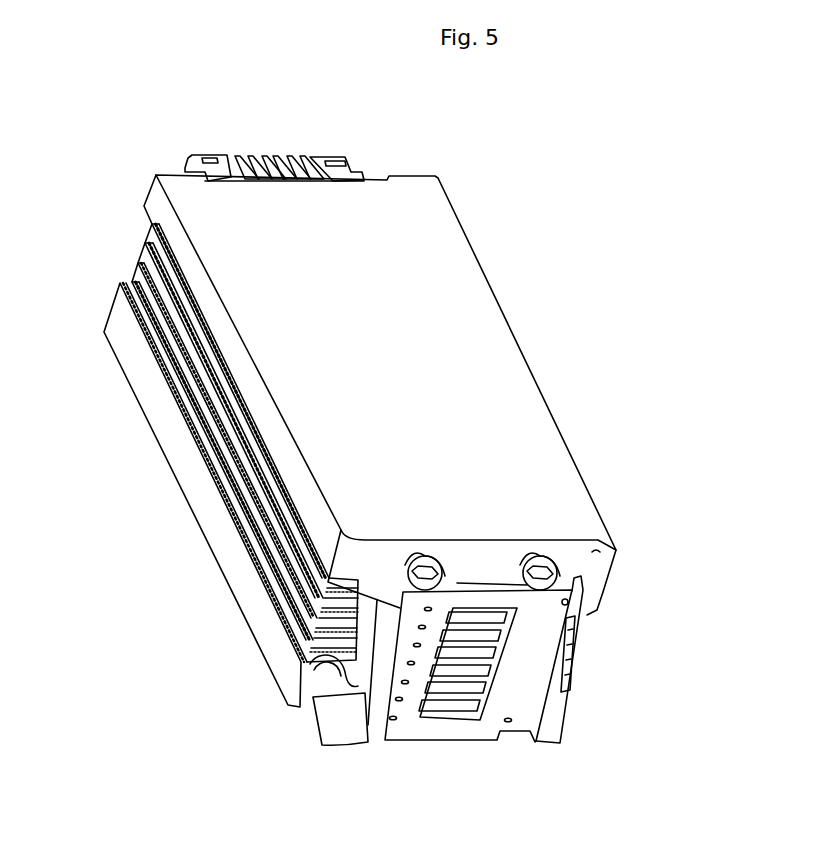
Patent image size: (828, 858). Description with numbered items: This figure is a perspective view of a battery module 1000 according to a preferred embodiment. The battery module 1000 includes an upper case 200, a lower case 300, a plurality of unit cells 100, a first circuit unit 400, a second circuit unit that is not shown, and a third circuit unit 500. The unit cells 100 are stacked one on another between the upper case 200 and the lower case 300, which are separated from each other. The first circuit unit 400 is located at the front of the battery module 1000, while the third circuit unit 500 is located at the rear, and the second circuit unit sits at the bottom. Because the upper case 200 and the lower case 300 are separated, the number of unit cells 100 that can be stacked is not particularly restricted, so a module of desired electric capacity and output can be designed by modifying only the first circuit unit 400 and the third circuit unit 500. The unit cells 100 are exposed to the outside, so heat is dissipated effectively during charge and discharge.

The battery module 1000 is at (82, 95).
The unit cells 100 is at (178, 395).
The upper case 200 is at (480, 340).
The lower case 300 is at (190, 473).
The first circuit unit 400 is at (530, 687).
The third circuit unit 500 is at (333, 157).